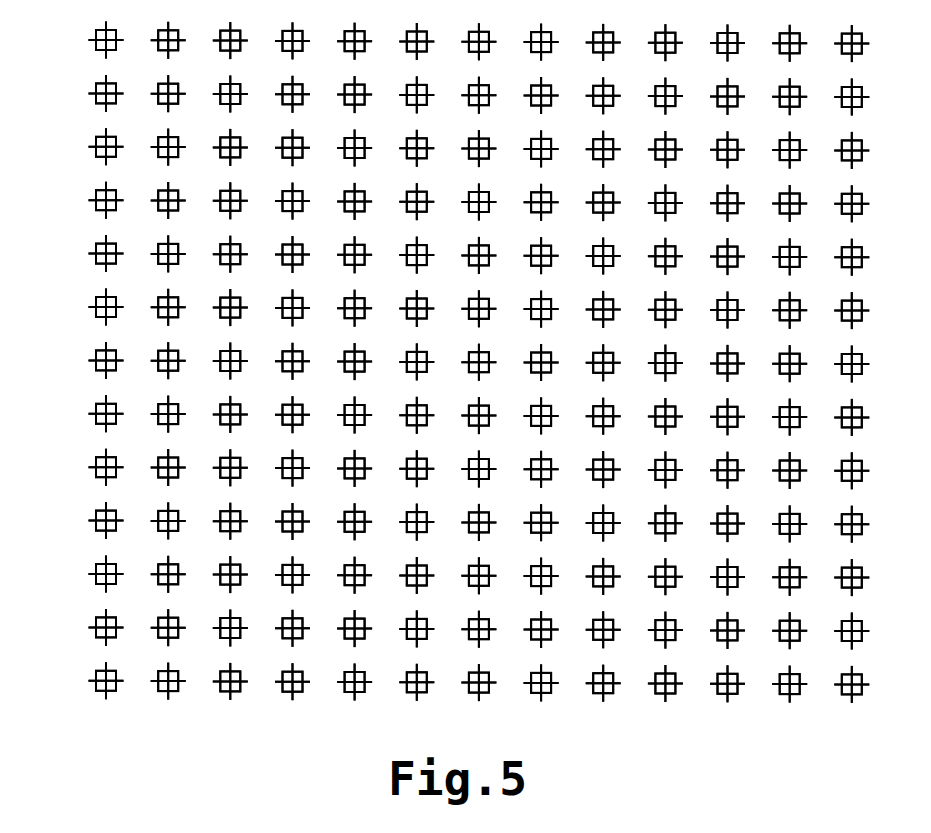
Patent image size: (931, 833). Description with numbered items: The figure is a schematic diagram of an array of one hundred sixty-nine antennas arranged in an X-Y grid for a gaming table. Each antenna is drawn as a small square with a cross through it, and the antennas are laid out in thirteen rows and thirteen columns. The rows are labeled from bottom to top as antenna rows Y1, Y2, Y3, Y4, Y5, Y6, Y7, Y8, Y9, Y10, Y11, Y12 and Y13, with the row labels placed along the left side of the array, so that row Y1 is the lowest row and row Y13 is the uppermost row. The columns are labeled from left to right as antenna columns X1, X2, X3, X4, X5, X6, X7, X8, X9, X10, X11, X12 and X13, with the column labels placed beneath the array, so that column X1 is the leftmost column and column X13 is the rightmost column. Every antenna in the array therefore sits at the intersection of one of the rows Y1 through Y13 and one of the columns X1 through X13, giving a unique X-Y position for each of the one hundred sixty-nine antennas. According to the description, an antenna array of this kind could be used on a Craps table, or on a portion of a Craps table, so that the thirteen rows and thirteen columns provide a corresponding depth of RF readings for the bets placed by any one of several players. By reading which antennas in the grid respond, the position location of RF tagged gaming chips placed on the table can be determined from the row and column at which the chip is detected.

The antenna column X1 is at (106, 376).
The antenna column X2 is at (168, 376).
The antenna column X3 is at (230, 376).
The antenna column X4 is at (292, 376).
The antenna column X5 is at (354, 377).
The antenna column X6 is at (416, 377).
The antenna column X7 is at (478, 377).
The antenna column X8 is at (541, 378).
The antenna column X9 is at (603, 378).
The antenna column X10 is at (665, 378).
The antenna column X11 is at (728, 379).
The antenna column X12 is at (790, 379).
The antenna column X13 is at (852, 379).
The antenna row Y1 is at (453, 682).
The antenna row Y2 is at (453, 629).
The antenna row Y3 is at (453, 576).
The antenna row Y4 is at (453, 522).
The antenna row Y5 is at (453, 469).
The antenna row Y6 is at (453, 415).
The antenna row Y7 is at (453, 362).
The antenna row Y8 is at (453, 309).
The antenna row Y9 is at (453, 255).
The antenna row Y10 is at (448, 202).
The antenna row Y11 is at (448, 148).
The antenna row Y12 is at (448, 95).
The antenna row Y13 is at (448, 42).